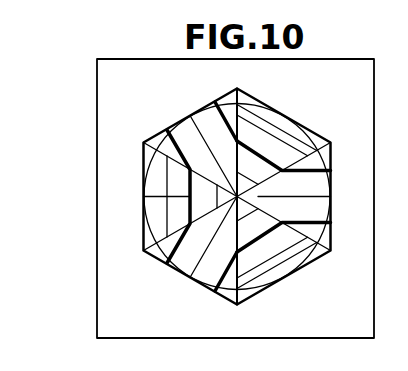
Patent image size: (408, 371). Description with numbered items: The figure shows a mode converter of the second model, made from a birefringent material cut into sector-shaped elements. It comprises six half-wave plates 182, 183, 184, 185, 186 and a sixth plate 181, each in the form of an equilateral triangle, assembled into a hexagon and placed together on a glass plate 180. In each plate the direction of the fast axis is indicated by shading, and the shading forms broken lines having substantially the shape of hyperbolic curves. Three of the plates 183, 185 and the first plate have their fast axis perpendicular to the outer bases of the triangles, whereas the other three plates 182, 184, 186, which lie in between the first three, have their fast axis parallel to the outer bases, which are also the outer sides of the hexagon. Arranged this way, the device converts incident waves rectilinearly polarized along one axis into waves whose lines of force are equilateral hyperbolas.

The glass plate 180 is at (122, 43).
The broken lines 181 is at (147, 202).
The sector-shaped half-wave plate 182 is at (292, 130).
The sector-shaped half-wave plate 183 is at (184, 130).
The sector-shaped half-wave plate 184 is at (148, 235).
The sector-shaped half-wave plate 185 is at (184, 270).
The sector-shaped half-wave plate 186 is at (292, 265).